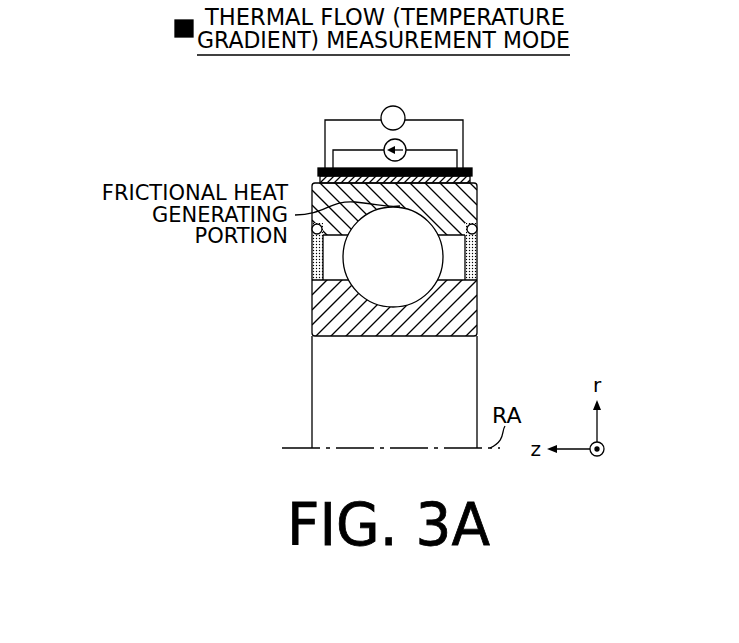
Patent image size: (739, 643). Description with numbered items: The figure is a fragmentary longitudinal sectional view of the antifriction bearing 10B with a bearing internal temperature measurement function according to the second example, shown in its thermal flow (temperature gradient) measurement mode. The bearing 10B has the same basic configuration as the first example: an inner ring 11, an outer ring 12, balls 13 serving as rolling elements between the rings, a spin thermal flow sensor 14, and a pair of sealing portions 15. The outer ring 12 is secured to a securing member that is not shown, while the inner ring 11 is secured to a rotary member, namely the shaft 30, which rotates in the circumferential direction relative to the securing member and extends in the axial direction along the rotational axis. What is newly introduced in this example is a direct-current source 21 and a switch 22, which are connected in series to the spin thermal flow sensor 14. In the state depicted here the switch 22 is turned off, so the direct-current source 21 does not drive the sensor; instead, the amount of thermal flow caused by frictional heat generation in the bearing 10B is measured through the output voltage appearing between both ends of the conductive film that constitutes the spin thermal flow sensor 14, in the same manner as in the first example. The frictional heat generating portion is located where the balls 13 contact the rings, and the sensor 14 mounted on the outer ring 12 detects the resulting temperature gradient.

The antifriction bearing with bearing internal temperature measurement function 10B is at (278, 163).
The inner ring 11 is at (472, 312).
The outer ring 12 is at (477, 212).
The balls (rolling elements) 13 is at (432, 263).
The spin thermal flow sensor 14 is at (461, 169).
The sealing portions 15 is at (478, 247).
The direct-current source 21 is at (407, 142).
The switch 22 is at (360, 150).
The rotary member (shaft) 30 is at (381, 416).